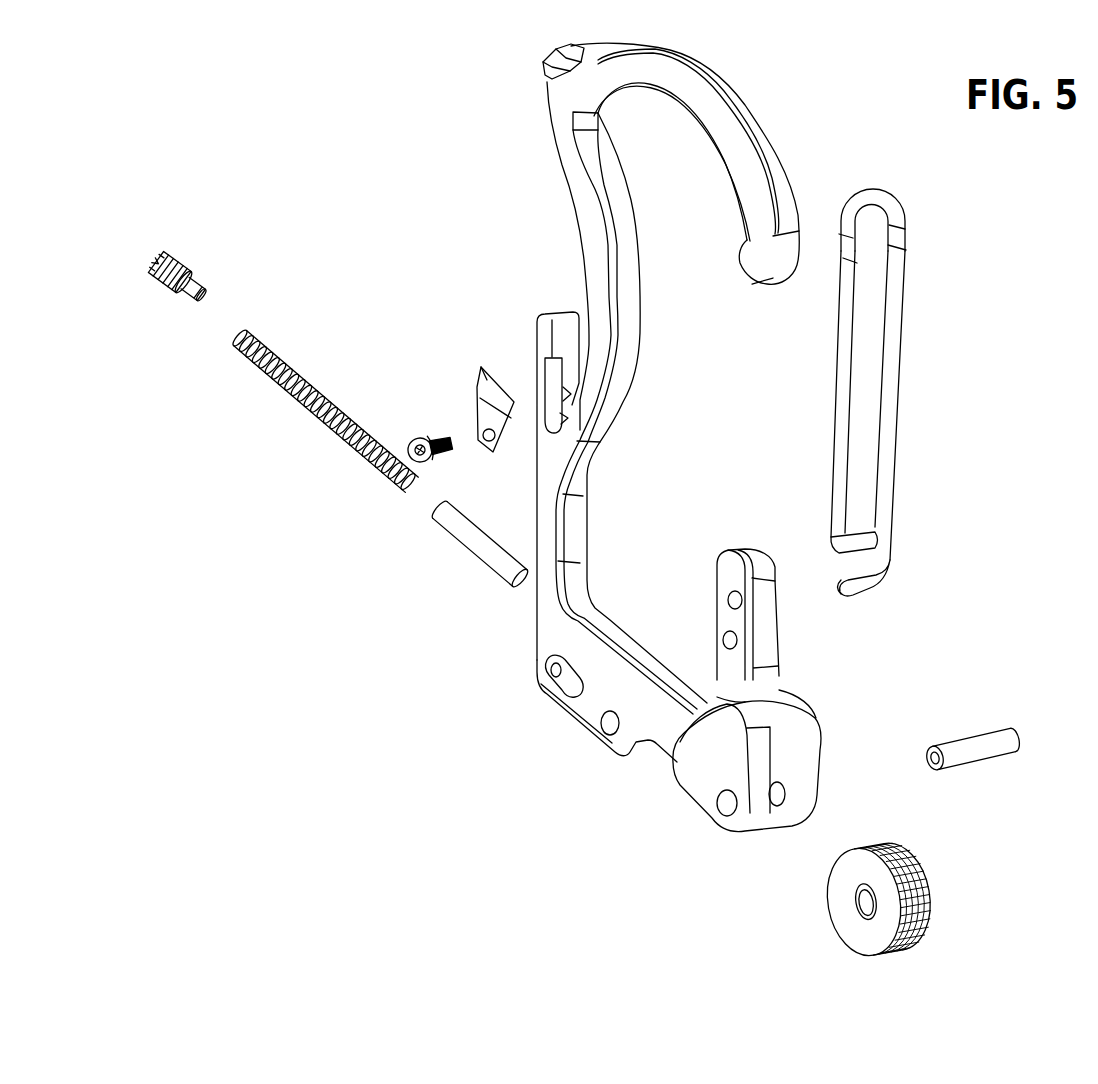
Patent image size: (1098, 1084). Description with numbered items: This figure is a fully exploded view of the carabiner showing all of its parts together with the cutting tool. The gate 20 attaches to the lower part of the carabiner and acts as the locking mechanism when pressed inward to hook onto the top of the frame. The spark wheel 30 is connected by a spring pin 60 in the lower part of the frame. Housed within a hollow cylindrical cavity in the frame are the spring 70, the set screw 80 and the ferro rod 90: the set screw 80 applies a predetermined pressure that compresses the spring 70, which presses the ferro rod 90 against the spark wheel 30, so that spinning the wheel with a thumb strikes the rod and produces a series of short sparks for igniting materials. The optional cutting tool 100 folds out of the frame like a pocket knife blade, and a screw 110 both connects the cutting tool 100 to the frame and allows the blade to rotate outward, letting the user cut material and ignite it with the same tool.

The gate 20 is at (928, 412).
The spark wheel 30 is at (808, 912).
The spring pin 60 is at (1003, 696).
The spring 70 is at (302, 424).
The set screw 80 is at (206, 255).
The ferro rod 90 is at (491, 579).
The cutting tool 100 is at (495, 346).
The screw 110 is at (444, 388).